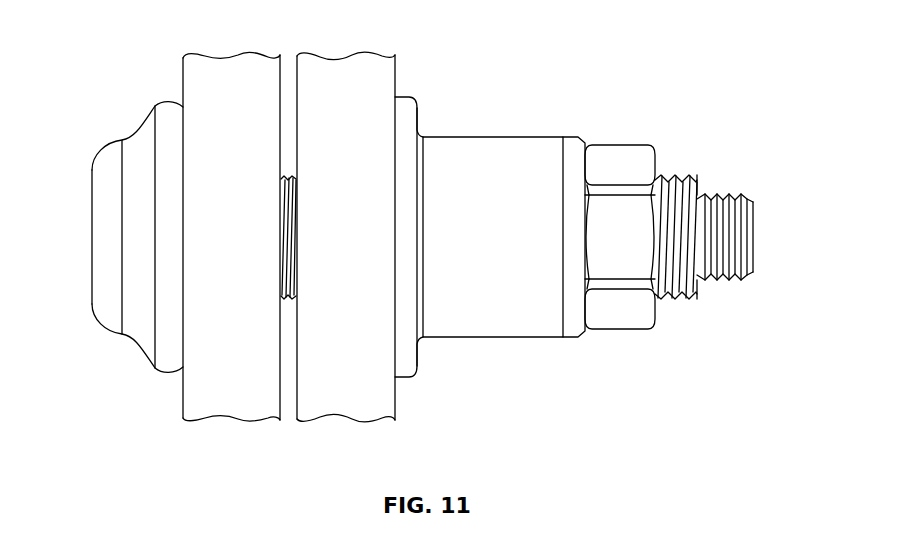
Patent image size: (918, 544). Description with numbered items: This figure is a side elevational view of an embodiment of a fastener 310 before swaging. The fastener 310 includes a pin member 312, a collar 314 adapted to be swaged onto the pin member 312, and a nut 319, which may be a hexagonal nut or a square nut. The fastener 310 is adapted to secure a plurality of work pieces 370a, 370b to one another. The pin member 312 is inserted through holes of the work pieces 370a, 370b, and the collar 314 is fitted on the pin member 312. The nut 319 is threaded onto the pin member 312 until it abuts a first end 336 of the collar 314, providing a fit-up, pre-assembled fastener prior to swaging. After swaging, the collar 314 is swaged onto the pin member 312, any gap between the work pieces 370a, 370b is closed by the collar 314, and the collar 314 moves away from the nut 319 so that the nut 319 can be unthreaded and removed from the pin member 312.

The fastener 310 is at (755, 142).
The pin member 312 is at (103, 198).
The collar 314 is at (498, 145).
The nut 319 is at (623, 157).
The first end 336 is at (575, 334).
The work piece 370a is at (207, 420).
The work piece 370b is at (325, 420).